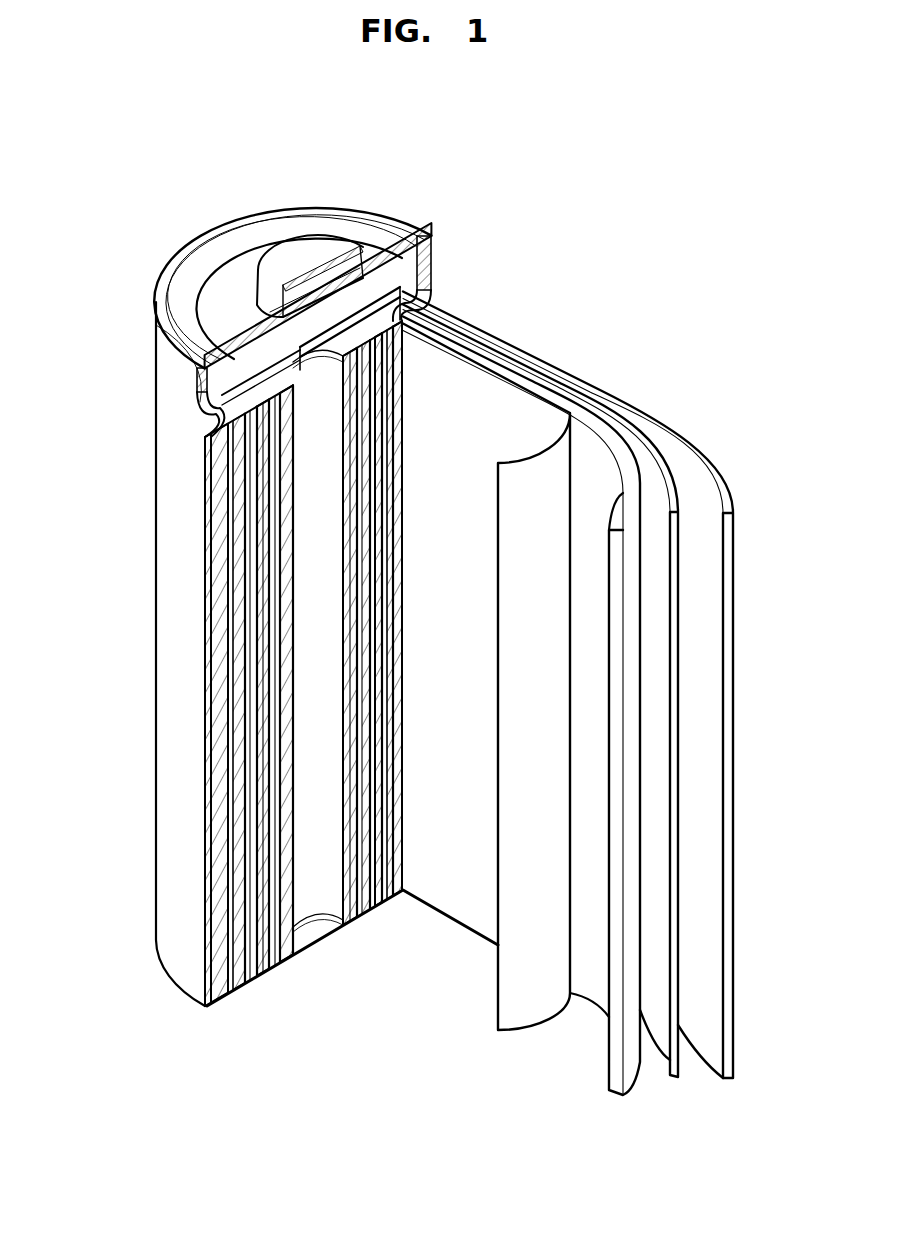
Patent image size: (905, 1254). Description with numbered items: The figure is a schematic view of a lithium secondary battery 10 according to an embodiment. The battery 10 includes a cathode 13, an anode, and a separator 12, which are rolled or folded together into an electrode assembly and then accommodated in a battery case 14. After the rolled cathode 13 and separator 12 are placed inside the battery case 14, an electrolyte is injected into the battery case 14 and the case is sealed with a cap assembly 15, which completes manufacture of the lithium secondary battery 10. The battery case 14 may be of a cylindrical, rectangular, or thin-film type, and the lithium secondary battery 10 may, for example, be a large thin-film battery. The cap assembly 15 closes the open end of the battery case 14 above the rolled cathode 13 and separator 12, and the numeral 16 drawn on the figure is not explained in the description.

The lithium secondary battery 10 is at (558, 168).
The separator 12 is at (720, 492).
The cathode 13 is at (595, 437).
The battery case 14 is at (507, 383).
The cap assembly 15 is at (168, 652).
The cap assembly 16 is at (290, 250).